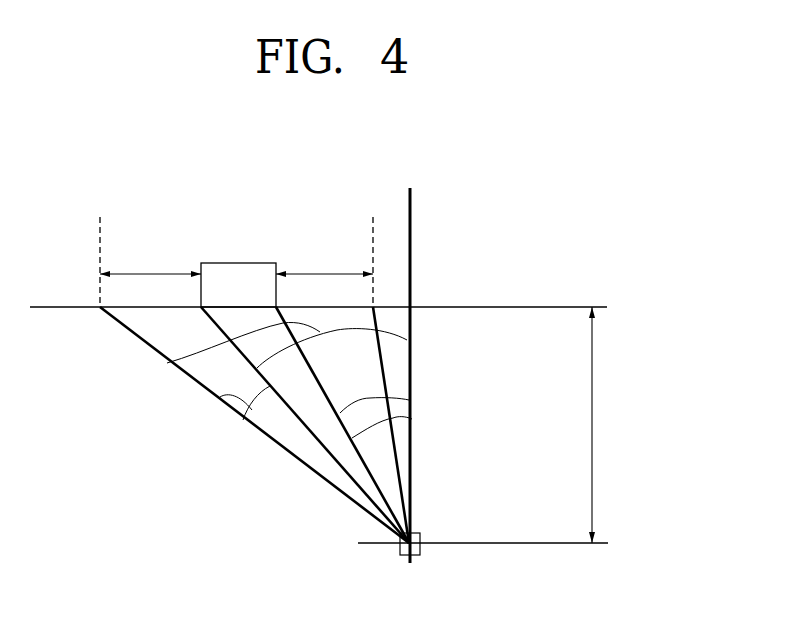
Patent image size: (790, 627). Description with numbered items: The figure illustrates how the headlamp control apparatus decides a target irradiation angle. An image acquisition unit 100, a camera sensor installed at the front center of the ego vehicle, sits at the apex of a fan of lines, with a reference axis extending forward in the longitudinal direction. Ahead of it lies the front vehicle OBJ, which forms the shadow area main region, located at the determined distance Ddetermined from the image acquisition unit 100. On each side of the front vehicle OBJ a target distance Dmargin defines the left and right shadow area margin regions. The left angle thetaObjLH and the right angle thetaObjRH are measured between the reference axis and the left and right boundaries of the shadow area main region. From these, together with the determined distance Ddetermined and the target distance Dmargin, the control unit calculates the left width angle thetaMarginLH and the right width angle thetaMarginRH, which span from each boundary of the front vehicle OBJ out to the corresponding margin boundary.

The image acquisition unit 100 is at (418, 555).
The front vehicle (shadow area main region) OBJ is at (238, 285).
The target distance Dmargin is at (236, 262).
The determined distance Ddetermined is at (652, 425).
The left angle thetaObjLH is at (167, 363).
The left width angle thetaMarginLH is at (220, 397).
The right angle thetaObjRH is at (367, 398).
The right width angle thetaMarginRH is at (412, 419).